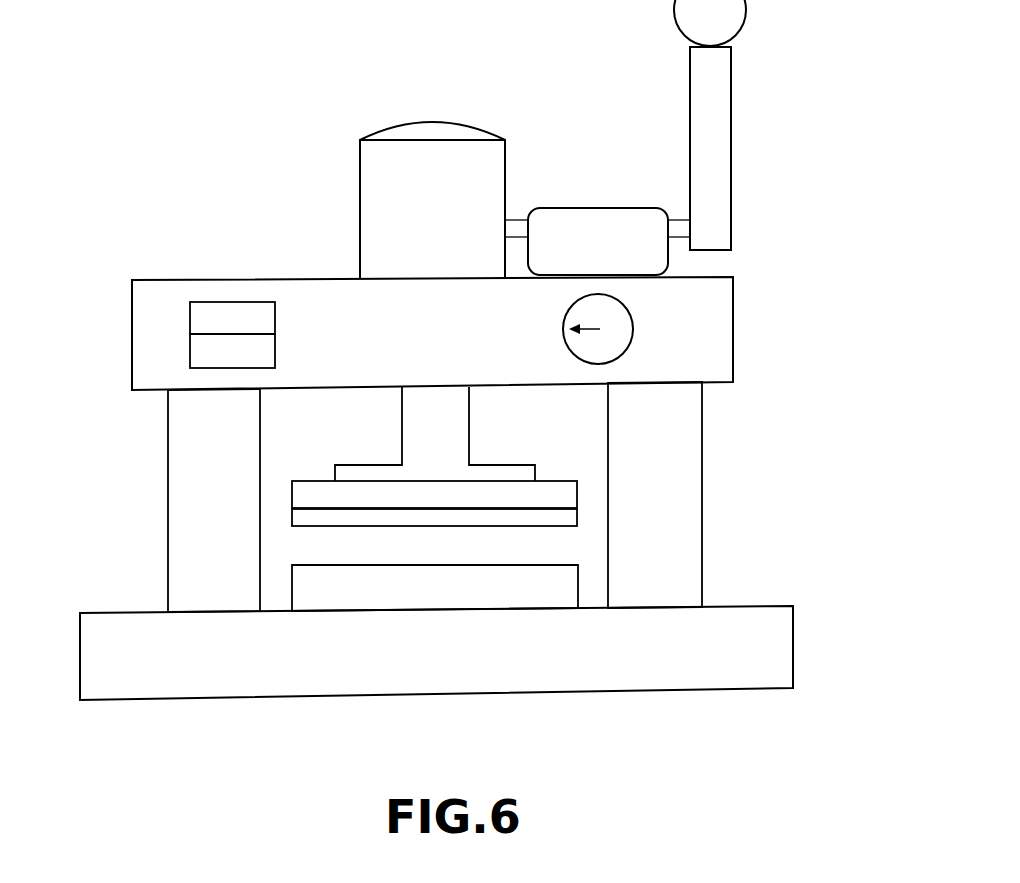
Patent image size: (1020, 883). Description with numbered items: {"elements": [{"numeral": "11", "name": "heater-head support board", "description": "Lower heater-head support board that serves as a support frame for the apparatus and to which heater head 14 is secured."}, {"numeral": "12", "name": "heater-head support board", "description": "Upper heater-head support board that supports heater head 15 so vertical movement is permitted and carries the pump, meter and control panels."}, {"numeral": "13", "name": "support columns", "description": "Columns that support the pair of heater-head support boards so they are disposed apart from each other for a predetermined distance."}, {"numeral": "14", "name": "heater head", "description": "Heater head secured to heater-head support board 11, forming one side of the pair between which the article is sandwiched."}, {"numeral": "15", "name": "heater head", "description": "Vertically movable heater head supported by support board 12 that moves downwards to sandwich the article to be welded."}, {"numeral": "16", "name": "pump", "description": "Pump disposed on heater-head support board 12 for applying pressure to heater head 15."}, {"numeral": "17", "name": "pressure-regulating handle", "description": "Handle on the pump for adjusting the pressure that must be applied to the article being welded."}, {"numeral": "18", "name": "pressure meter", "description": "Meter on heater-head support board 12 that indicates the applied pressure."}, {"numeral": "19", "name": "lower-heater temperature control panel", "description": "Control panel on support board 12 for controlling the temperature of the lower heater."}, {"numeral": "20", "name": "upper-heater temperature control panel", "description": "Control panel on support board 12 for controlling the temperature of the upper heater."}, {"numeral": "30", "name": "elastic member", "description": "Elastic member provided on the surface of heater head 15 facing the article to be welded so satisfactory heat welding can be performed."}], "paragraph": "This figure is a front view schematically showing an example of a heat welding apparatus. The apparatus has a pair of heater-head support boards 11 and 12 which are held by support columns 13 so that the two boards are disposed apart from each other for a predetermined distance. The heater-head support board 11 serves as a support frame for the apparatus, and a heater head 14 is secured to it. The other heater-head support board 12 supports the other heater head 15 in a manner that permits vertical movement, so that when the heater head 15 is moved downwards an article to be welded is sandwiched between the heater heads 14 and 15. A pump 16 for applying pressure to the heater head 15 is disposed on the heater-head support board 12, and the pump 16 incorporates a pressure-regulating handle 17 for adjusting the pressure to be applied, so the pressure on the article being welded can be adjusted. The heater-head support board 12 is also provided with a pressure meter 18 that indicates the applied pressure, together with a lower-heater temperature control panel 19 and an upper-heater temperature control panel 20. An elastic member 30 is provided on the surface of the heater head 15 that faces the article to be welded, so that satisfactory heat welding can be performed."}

The base 11 is at (440, 680).
The upper frame plate 12 is at (147, 317).
The support columns 13 is at (185, 490).
The lower platen 14 is at (567, 588).
The upper platen 15 is at (573, 490).
The motor 16 is at (425, 165).
The hydraulic cylinder 17 is at (718, 100).
The pressure gauge 18 is at (630, 325).
The controller 19 is at (203, 347).
The control unit 20 is at (232, 318).
The press plate 30 is at (572, 515).